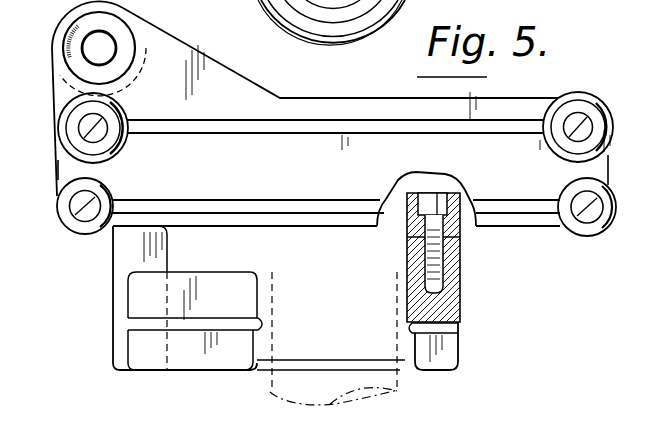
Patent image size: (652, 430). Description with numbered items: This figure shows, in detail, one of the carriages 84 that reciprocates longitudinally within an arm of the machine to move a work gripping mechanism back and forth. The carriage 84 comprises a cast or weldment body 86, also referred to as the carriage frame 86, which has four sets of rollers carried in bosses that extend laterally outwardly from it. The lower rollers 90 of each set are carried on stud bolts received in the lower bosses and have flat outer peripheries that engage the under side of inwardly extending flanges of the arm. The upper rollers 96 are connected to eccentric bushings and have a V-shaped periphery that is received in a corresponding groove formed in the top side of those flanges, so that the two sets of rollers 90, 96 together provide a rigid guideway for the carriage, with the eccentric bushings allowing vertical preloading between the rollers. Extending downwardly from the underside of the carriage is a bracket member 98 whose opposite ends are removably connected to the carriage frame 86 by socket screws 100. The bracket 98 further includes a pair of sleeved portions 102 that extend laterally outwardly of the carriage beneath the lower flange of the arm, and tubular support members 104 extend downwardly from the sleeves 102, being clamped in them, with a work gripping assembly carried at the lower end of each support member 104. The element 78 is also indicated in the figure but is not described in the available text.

The pivot bracket with idler pulley 78 is at (73, 98).
The carriage 84 is at (93, 257).
The body 86 is at (333, 98).
The lower rollers 90 is at (63, 224).
The upper rollers 96 is at (118, 110).
The bracket member 98 is at (458, 308).
The socket screws 100 is at (438, 257).
The sleeved portions 102 is at (17, 390).
The tubular support members 104 is at (296, 8).